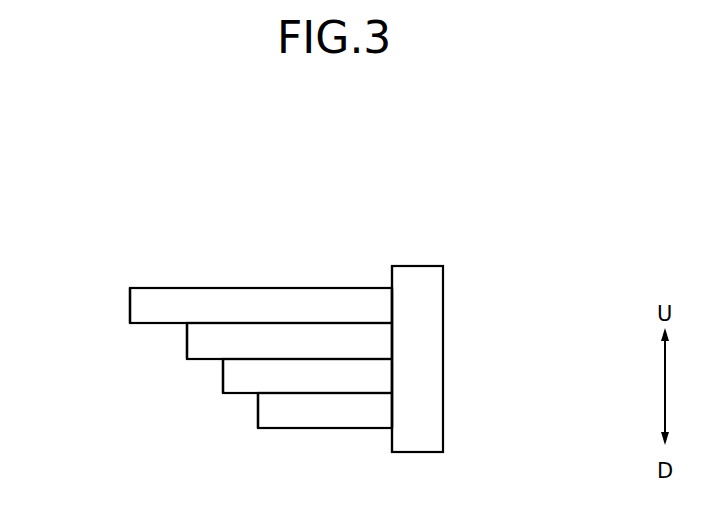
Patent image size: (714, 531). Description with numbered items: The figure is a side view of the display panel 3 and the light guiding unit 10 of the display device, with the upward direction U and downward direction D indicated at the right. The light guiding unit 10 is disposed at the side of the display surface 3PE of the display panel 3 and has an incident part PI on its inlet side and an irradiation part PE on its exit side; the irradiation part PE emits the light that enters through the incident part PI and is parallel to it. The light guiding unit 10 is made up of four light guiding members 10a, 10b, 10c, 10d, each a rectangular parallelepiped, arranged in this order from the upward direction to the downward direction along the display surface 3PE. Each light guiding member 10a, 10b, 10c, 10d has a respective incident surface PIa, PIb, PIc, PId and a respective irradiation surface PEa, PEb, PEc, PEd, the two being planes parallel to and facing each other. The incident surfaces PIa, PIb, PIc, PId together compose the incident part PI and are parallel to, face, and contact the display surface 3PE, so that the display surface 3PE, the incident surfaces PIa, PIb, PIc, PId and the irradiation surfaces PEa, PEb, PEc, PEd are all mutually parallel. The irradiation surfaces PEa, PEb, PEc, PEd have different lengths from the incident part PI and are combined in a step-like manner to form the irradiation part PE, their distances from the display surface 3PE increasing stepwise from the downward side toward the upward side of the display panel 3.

The light guiding unit 10 is at (252, 267).
The light guiding member 10a is at (151, 300).
The light guiding member 10b is at (205, 338).
The light guiding member 10c is at (257, 372).
The light guiding member 10d is at (316, 403).
The display panel 3 is at (432, 266).
The display surface 3PE is at (384, 296).
The irradiation part PE is at (167, 459).
The irradiation surface PEa is at (119, 305).
The irradiation surface PEb is at (176, 345).
The irradiation surface PEc is at (212, 382).
The irradiation surface PEd is at (247, 420).
The incident part PI is at (552, 319).
The incident surface PIa is at (405, 305).
The incident surface PIb is at (405, 341).
The incident surface PIc is at (405, 377).
The incident surface PId is at (405, 414).